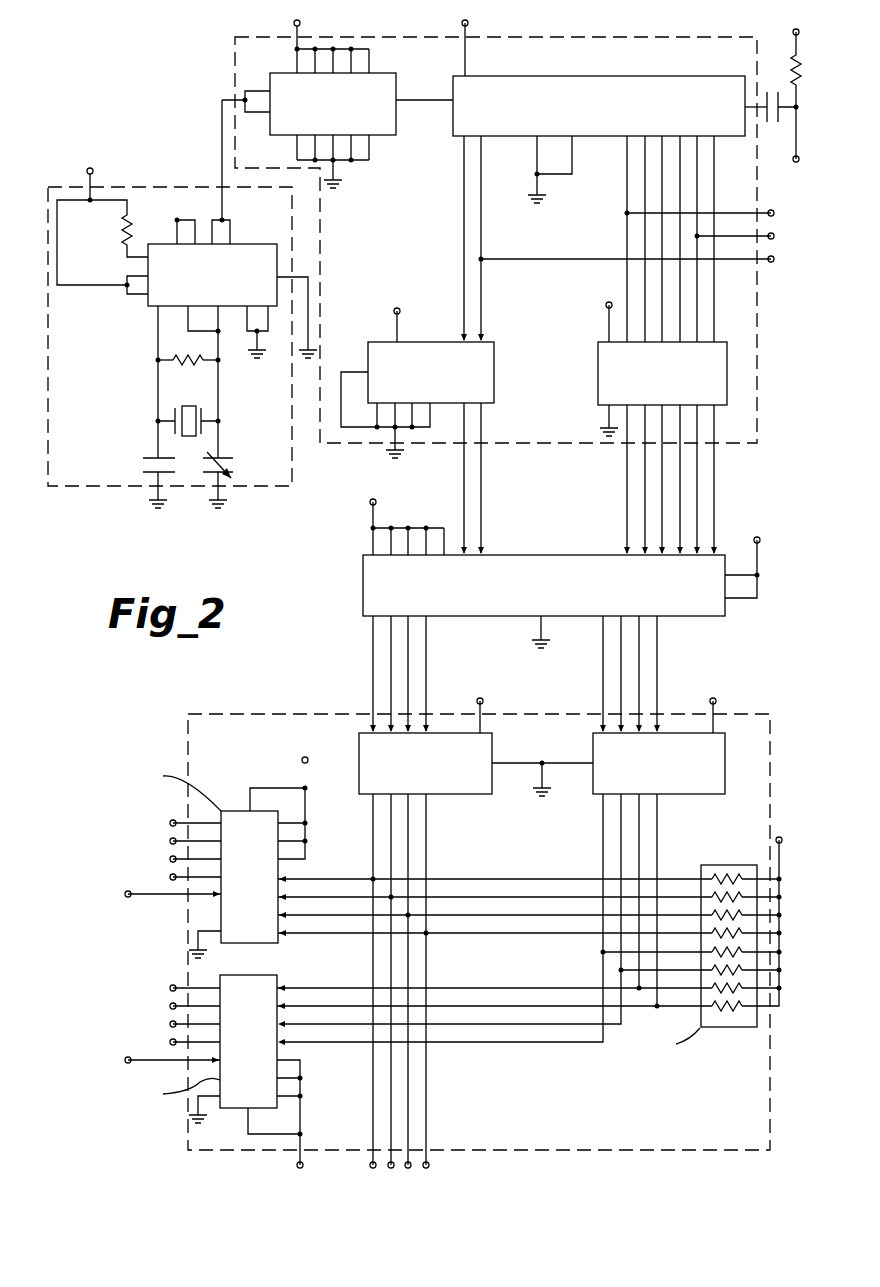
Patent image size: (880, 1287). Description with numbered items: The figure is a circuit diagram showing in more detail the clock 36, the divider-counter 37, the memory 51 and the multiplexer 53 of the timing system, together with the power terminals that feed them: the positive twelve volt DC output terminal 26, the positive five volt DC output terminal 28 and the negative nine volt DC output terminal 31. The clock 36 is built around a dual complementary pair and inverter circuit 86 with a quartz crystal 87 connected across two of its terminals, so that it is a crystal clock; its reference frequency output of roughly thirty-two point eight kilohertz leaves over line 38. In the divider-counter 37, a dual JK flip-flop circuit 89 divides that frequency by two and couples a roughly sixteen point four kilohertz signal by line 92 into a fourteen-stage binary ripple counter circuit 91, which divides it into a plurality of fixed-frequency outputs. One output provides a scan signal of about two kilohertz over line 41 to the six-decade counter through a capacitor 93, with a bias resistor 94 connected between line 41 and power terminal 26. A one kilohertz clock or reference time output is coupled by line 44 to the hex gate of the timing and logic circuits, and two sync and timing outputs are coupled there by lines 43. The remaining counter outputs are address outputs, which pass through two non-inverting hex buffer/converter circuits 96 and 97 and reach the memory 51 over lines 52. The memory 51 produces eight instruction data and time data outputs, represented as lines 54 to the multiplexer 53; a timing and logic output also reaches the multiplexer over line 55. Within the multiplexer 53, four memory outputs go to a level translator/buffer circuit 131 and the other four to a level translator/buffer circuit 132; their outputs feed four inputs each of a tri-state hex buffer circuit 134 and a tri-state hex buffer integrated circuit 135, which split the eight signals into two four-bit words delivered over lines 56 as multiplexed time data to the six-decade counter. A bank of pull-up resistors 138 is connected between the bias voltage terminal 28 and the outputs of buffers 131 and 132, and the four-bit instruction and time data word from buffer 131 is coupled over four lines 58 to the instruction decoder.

The DC output terminal 26 is at (295, 20).
The DC output terminal 28 is at (399, 308).
The DC output terminal 31 is at (760, 538).
The clock 36 is at (90, 488).
The divider-counter 37 is at (572, 37).
The line 38 is at (222, 135).
The line 41 is at (796, 163).
The lines 43 is at (780, 207).
The line 44 is at (532, 259).
The memory 51 is at (363, 595).
The lines 52 is at (724, 488).
The multiplexer 53 is at (245, 714).
The lines 54 is at (663, 664).
The line 55 is at (125, 890).
The lines 56 is at (168, 818).
The lines 58 is at (434, 1173).
The dual complementary pair and inverter circuit 86 is at (150, 308).
The quartz crystal 87 is at (185, 406).
The dual JK flip-flop circuit 89 is at (396, 130).
The fourteen-stage binary ripple counter circuit 91 is at (672, 76).
The line 92 is at (416, 100).
The capacitor 93 is at (770, 125).
The bias resistor 94 is at (792, 66).
The hex buffer/converter circuit 96 is at (494, 391).
The hex buffer/converter circuit 97 is at (598, 354).
The level translator/buffer circuit 131 is at (455, 794).
The level translator/buffer circuit 132 is at (687, 794).
The tri-state hex buffer circuit 134 is at (260, 943).
The tri-state hex buffer integrated circuit 135 is at (277, 1050).
The bank of pull-up resistors 138 is at (722, 865).